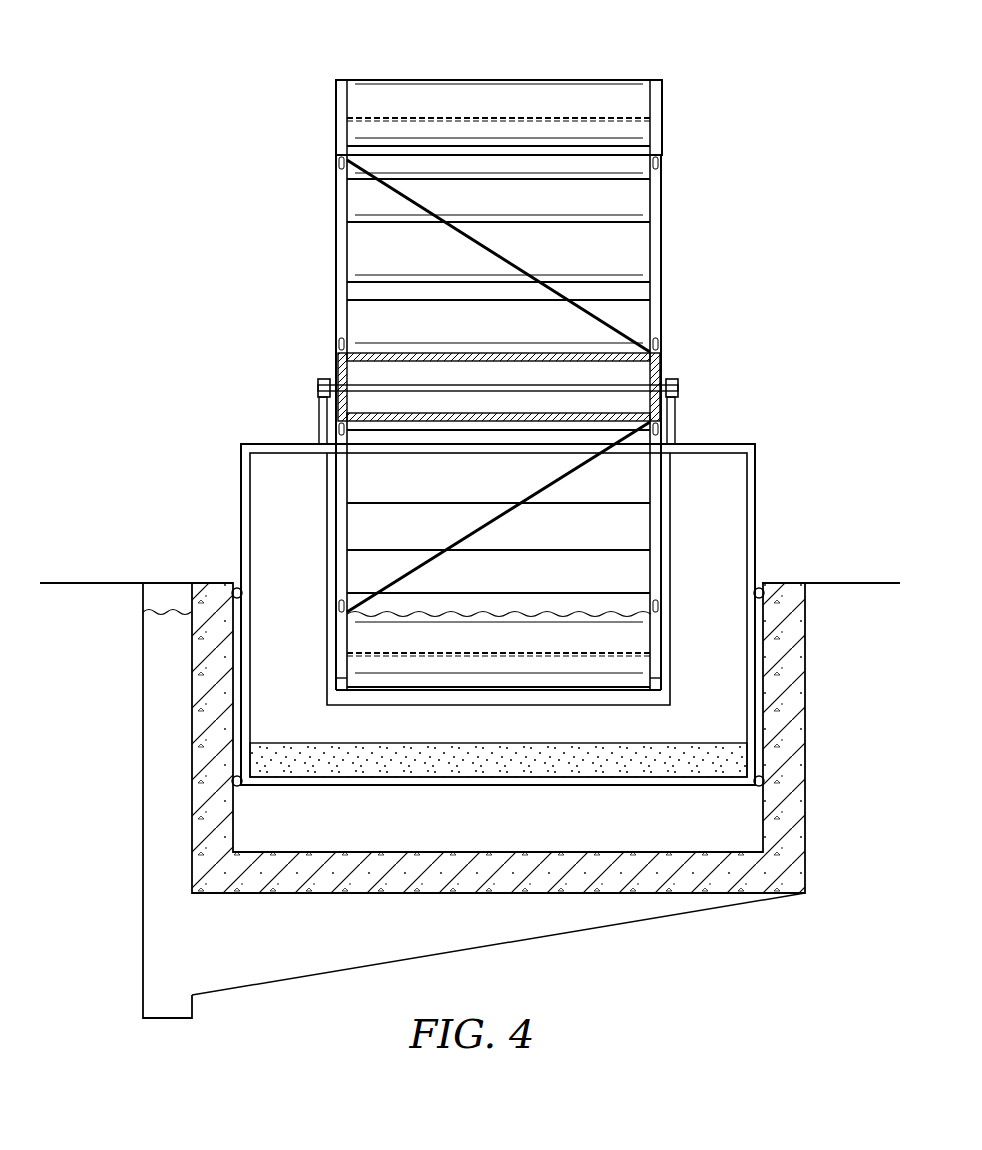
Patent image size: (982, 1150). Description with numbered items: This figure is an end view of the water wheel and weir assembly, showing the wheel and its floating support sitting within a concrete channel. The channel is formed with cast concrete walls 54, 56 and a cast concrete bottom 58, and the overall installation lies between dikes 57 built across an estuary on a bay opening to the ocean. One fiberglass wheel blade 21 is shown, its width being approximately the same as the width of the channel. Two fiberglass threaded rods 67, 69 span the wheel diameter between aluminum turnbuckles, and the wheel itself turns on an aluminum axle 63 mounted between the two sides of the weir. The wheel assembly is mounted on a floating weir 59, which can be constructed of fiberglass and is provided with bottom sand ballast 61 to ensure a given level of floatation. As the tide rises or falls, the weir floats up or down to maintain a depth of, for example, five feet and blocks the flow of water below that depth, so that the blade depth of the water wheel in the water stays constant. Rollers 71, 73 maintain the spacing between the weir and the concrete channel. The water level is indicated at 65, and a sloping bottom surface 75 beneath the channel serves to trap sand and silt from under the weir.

The wheel blade 21 is at (498, 90).
The fiberglass threaded rod 67 is at (520, 258).
The aluminum axle 63 is at (650, 376).
The fiberglass threaded rod 69 is at (550, 483).
The floating weir 59 is at (778, 479).
The bottom sand ballast 61 is at (288, 752).
The roller 71 is at (236, 588).
The roller 73 is at (239, 787).
The bottom 58 is at (497, 858).
The cast concrete wall 56 is at (208, 590).
The cast concrete wall 54 is at (770, 597).
The dike 57 is at (850, 590).
The water level 65 is at (165, 612).
The sloping bottom surface 75 is at (330, 970).